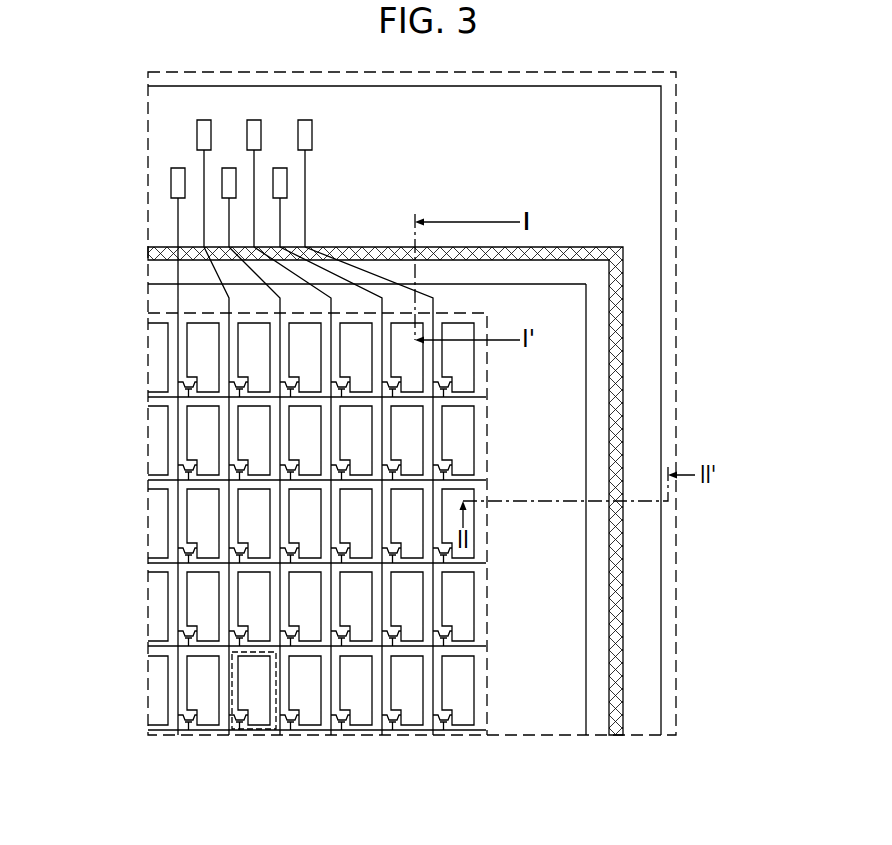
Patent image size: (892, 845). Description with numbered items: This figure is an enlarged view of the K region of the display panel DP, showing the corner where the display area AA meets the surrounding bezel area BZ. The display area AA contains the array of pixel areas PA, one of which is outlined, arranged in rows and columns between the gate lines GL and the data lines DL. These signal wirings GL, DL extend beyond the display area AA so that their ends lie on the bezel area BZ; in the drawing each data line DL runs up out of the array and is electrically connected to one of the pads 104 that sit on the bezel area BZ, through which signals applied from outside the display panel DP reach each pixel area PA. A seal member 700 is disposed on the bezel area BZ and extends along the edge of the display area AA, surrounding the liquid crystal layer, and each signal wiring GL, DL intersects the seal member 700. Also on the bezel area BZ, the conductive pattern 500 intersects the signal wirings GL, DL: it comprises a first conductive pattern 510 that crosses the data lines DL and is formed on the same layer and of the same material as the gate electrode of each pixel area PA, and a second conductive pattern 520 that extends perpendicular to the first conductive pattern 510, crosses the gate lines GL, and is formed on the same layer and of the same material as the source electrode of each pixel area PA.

The pad 104 is at (188, 135).
The K region K is at (676, 120).
The bezel area BZ is at (628, 184).
The first conductive pattern 510 is at (560, 283).
The second conductive pattern 520 is at (586, 293).
The conductive pattern 500 is at (468, 472).
The display panel DP is at (663, 413).
The seal member 700 is at (623, 578).
The gate line GL is at (148, 397).
The data line DL is at (178, 520).
The pixel area PA is at (260, 731).
The display area AA is at (487, 685).